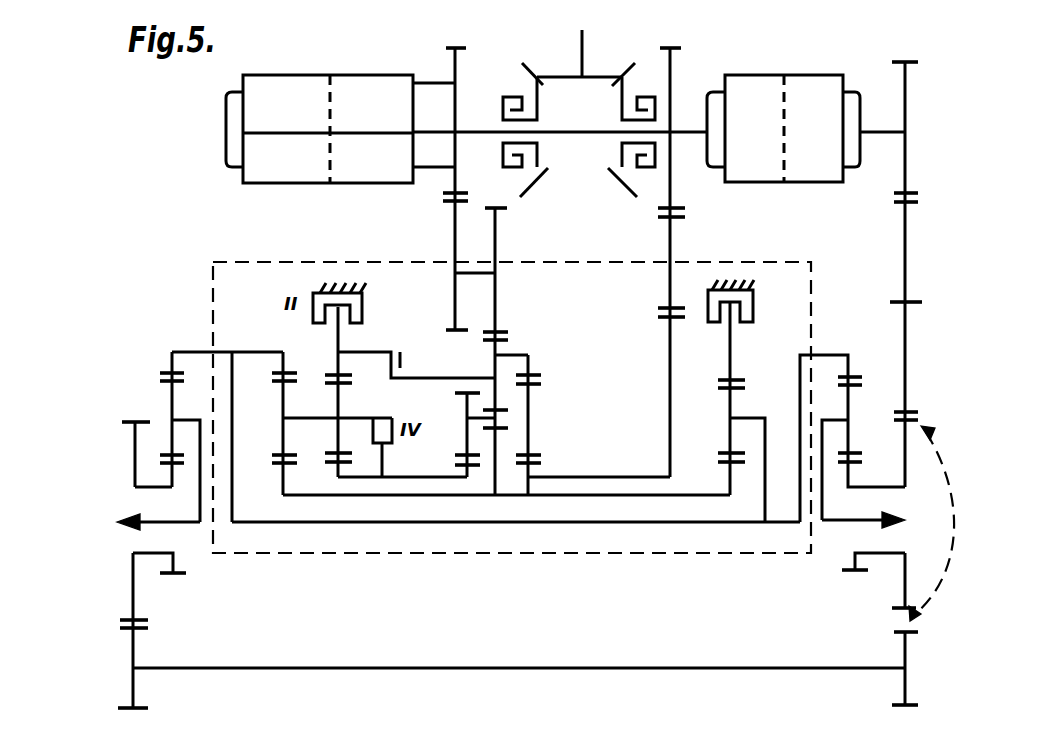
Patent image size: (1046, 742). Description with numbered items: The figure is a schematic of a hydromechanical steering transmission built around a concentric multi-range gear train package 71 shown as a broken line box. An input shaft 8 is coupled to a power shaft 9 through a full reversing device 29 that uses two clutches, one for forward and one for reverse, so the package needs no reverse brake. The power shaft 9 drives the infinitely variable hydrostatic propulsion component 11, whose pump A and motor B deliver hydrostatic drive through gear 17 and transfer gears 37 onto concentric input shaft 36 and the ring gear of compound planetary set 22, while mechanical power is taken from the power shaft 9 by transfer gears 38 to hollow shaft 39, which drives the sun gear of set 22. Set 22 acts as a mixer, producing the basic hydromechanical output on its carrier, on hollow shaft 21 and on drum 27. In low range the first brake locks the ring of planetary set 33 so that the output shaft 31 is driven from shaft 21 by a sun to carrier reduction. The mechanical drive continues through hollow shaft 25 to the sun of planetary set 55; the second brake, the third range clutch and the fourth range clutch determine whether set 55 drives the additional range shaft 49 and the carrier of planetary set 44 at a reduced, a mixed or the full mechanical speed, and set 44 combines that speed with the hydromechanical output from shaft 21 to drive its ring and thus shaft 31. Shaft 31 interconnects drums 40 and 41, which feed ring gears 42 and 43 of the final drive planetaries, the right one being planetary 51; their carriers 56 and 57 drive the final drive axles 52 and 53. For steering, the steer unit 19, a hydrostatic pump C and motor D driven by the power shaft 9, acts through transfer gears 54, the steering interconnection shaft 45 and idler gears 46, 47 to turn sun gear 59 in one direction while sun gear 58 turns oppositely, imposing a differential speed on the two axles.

The input shaft 8 is at (586, 45).
The power shaft 9 is at (445, 130).
The infinitely variable component 11 is at (318, 73).
The gear 17 is at (440, 172).
The steer unit 19 is at (797, 73).
The hollow shaft 21 is at (432, 497).
The compound planetary set 22 is at (560, 418).
The hollow shaft 25 is at (438, 478).
The drum 27 is at (452, 365).
The full reversing device 29 is at (568, 66).
The output shaft 31 is at (480, 524).
The planetary set 33 is at (720, 400).
The concentric input shaft 36 is at (518, 357).
The transfer gears 37 is at (452, 250).
The transfer gears 38 is at (685, 193).
The hollow shaft 39 is at (652, 475).
The drum 40 is at (192, 348).
The drum 41 is at (840, 356).
The ring gear 42 is at (172, 363).
The ring gear 43 is at (856, 372).
The planetary set 44 is at (279, 408).
The steering interconnection shaft 45 is at (462, 668).
The idler gear 46 is at (140, 652).
The idler gear 47 is at (902, 650).
The additional range shaft 49 is at (322, 430).
The final drive planetary 51 is at (846, 348).
The final drive axle 52 is at (147, 518).
The final drive axle 53 is at (873, 518).
The transfer gears 54 is at (895, 207).
The planetary set 55 is at (350, 410).
The carrier 56 is at (187, 455).
The carrier 57 is at (836, 414).
The sun gear 58 is at (176, 480).
The sun gear 59 is at (855, 468).
The concentric gear train package 71 is at (460, 553).